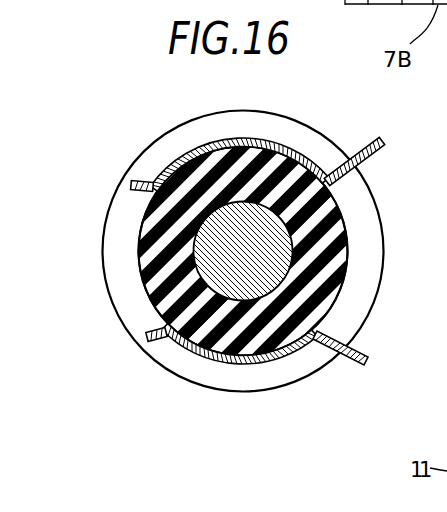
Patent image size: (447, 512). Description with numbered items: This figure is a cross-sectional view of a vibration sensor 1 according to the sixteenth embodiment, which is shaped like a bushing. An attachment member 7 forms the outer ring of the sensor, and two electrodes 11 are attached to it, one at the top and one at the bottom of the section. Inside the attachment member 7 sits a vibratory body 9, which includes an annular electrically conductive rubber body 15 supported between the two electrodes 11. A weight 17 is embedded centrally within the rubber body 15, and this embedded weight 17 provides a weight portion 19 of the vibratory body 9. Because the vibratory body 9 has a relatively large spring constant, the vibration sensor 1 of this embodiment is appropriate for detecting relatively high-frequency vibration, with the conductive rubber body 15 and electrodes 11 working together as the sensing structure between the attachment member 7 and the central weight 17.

The vibration sensor 1 is at (394, 236).
The attachment member 7 is at (368, 280).
The vibratory body 9 is at (350, 212).
The electrodes 11 is at (245, 422).
The electrically conductive rubber body 15 is at (152, 263).
The weight 17 is at (208, 228).
The weight portion 19 is at (188, 287).